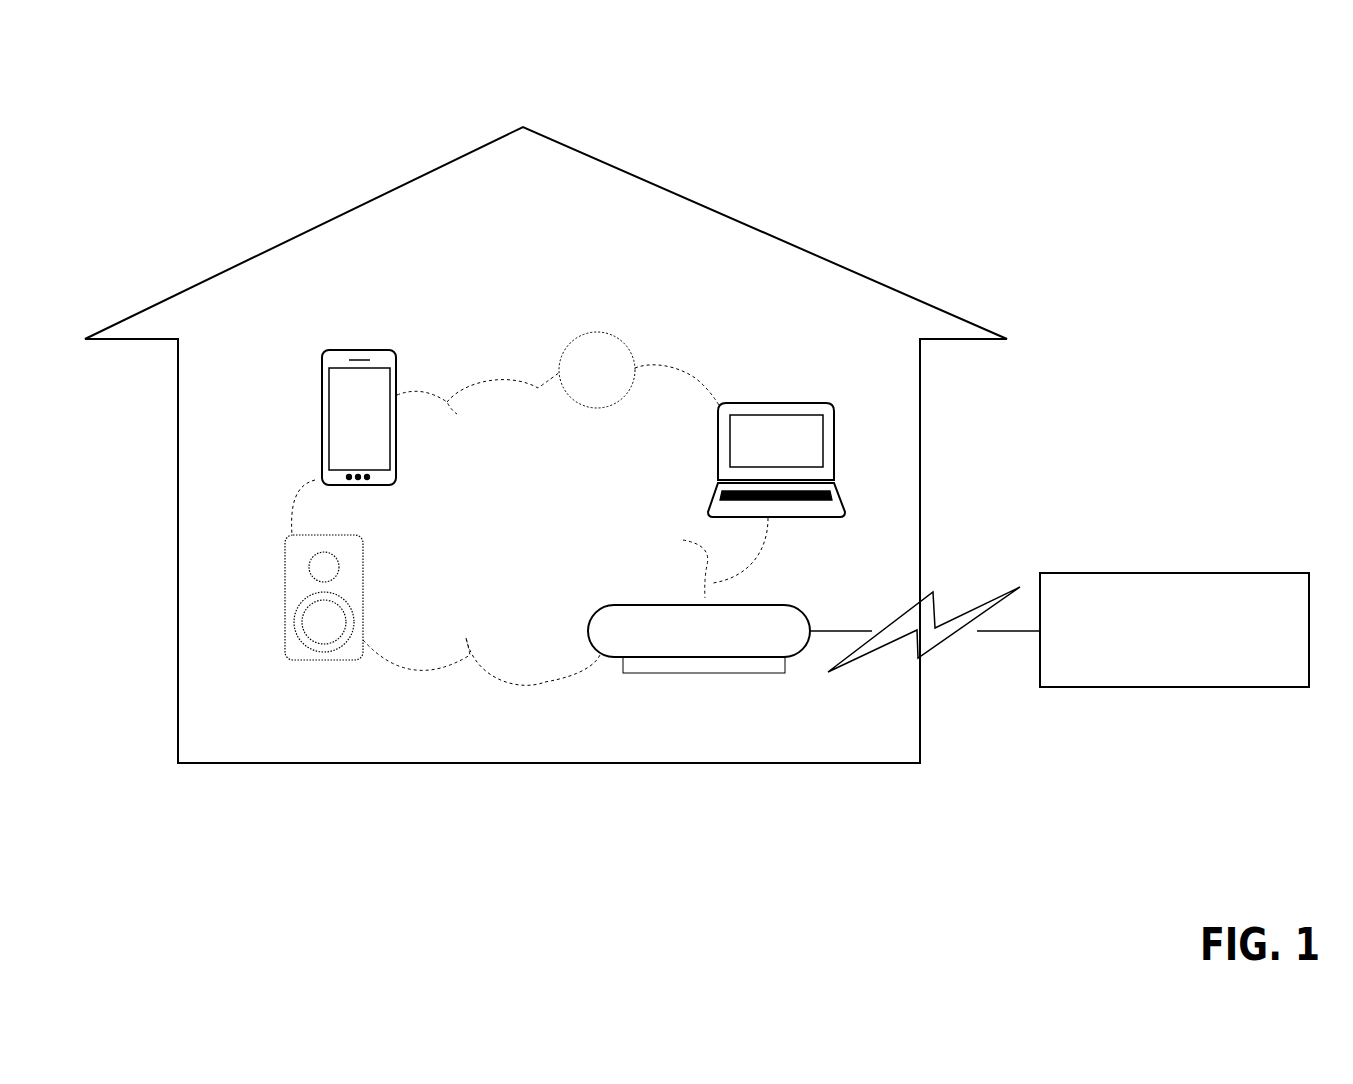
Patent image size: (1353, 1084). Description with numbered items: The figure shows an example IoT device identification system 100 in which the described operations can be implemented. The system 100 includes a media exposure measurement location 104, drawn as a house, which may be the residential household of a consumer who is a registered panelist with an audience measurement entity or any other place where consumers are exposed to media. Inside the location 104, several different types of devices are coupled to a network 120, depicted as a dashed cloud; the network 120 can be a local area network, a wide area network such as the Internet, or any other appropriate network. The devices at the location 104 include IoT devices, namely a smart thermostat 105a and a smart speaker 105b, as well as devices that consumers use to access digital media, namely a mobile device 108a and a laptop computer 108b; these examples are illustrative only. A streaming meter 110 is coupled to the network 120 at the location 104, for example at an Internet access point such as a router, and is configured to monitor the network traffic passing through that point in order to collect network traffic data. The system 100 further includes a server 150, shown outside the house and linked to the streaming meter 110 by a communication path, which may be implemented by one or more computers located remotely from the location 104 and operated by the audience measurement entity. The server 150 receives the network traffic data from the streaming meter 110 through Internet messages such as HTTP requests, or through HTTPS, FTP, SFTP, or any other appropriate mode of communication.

The IoT device identification system 100 is at (1141, 70).
The media exposure measurement location 104 is at (778, 237).
The smart thermostat 105a is at (632, 352).
The smart speaker 105b is at (325, 662).
The mobile device 108a is at (375, 350).
The laptop computer 108b is at (835, 443).
The streaming meter 110 is at (733, 673).
The network 120 is at (530, 525).
The server 150 is at (1174, 630).